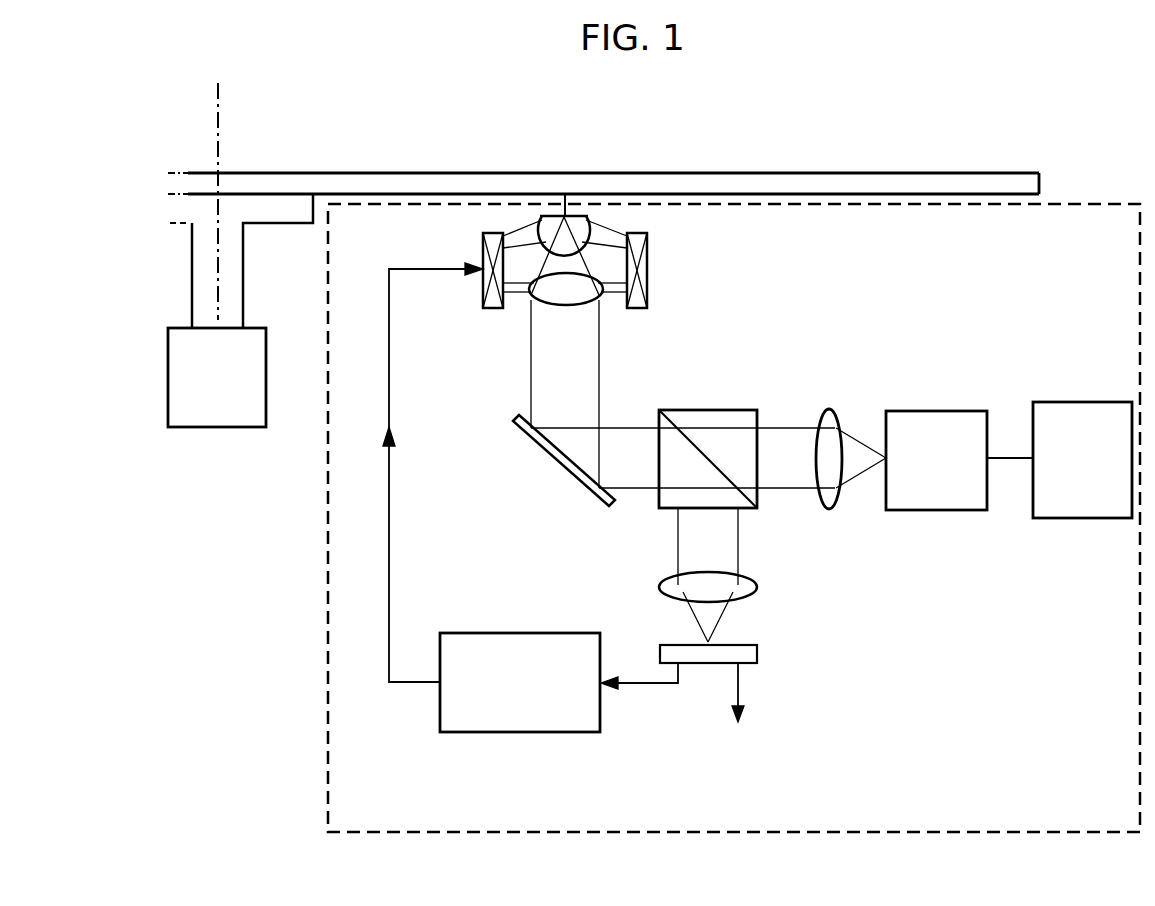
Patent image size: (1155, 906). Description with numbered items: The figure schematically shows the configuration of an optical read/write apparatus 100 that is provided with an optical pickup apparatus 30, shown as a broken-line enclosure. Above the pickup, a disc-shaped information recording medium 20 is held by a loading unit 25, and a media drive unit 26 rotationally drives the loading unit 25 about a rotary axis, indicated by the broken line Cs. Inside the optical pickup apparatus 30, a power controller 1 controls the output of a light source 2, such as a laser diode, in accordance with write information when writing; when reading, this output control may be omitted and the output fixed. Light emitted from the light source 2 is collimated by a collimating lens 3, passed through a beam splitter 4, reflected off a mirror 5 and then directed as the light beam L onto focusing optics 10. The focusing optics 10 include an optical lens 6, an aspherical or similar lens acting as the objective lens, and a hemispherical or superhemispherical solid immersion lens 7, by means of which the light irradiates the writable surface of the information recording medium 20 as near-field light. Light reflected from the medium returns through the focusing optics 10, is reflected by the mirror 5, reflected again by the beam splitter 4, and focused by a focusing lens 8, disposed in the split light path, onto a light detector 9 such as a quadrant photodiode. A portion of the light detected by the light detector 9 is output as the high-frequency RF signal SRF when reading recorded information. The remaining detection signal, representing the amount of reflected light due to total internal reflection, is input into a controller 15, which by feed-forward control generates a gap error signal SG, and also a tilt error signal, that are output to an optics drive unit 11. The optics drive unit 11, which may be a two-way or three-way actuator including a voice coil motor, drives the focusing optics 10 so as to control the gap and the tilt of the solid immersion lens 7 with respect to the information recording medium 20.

The optical read/write apparatus 100 is at (522, 85).
The power controller 1 is at (1085, 402).
The light source 2 is at (937, 411).
The collimating lens 3 is at (830, 410).
The beam splitter 4 is at (727, 410).
The mirror 5 is at (563, 470).
The optical lens 6 is at (585, 284).
The solid immersion lens 7 is at (589, 220).
The focusing lens 8 is at (758, 590).
The light detector 9 is at (758, 654).
The focusing optics 10 is at (588, 252).
The optics drive unit 11 is at (483, 240).
The controller 15 is at (520, 733).
The information recording medium 20 is at (817, 173).
The loading unit 25 is at (283, 224).
The media drive unit 26 is at (207, 428).
The optical pickup apparatus 30 is at (632, 833).
The rotary axis Cs is at (219, 92).
The laser light beam L is at (600, 378).
The gap error signal SG is at (433, 472).
The RF signal SRF is at (740, 712).